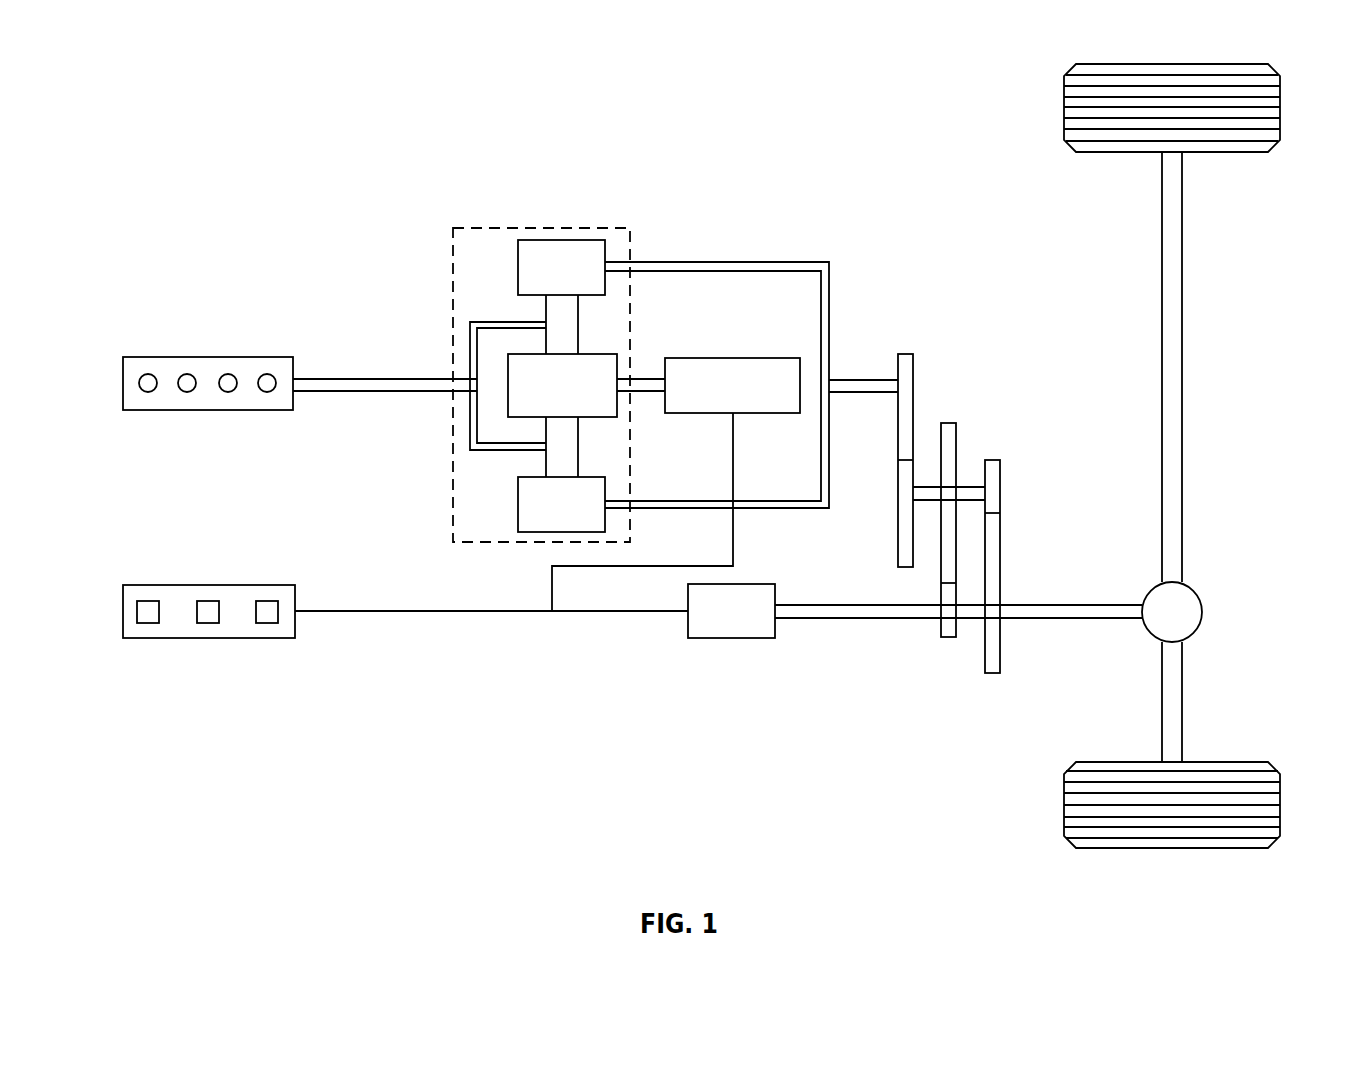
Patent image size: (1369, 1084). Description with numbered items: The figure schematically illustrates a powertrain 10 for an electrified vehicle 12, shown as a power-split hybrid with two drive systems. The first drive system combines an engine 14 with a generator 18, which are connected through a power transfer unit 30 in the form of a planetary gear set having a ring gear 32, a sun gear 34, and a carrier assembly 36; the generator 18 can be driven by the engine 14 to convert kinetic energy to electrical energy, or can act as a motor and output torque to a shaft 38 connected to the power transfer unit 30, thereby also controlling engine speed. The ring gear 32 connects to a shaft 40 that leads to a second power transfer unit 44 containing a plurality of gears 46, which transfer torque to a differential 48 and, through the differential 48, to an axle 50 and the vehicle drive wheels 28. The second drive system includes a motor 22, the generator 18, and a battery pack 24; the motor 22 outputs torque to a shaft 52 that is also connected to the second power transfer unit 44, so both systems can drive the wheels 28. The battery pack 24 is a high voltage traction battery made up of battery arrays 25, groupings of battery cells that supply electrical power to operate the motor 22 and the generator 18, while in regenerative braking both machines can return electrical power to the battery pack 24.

The powertrain 10 is at (258, 128).
The electrified vehicle 12 is at (750, 207).
The engine 14 is at (208, 410).
The generator 18 is at (733, 358).
The motor 22 is at (733, 638).
The battery pack 24 is at (172, 621).
The battery arrays 25 is at (148, 623).
The vehicle drive wheels 28 is at (1280, 108).
The power transfer unit 30 is at (518, 228).
The ring gear 32 is at (563, 240).
The sun gear 34 is at (620, 405).
The carrier assembly 36 is at (470, 414).
The shaft 38 is at (640, 378).
The shaft 40 is at (878, 392).
The second power transfer unit 44 is at (993, 478).
The gears 46 is at (905, 354).
The differential 48 is at (1203, 612).
The axle 50 is at (1183, 400).
The shaft 52 is at (878, 618).